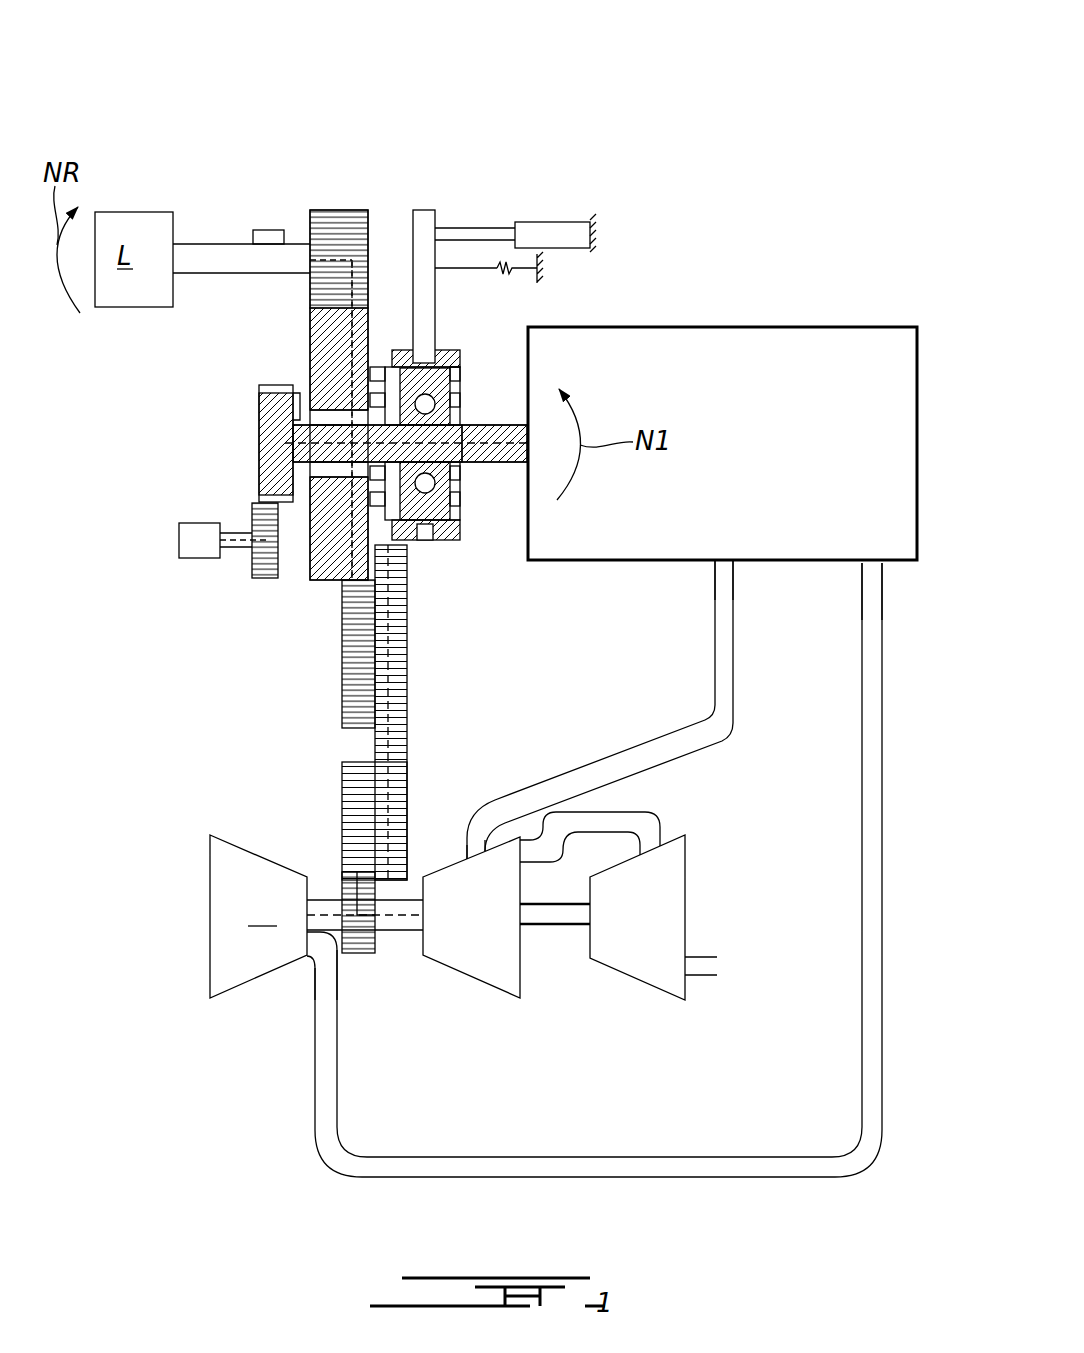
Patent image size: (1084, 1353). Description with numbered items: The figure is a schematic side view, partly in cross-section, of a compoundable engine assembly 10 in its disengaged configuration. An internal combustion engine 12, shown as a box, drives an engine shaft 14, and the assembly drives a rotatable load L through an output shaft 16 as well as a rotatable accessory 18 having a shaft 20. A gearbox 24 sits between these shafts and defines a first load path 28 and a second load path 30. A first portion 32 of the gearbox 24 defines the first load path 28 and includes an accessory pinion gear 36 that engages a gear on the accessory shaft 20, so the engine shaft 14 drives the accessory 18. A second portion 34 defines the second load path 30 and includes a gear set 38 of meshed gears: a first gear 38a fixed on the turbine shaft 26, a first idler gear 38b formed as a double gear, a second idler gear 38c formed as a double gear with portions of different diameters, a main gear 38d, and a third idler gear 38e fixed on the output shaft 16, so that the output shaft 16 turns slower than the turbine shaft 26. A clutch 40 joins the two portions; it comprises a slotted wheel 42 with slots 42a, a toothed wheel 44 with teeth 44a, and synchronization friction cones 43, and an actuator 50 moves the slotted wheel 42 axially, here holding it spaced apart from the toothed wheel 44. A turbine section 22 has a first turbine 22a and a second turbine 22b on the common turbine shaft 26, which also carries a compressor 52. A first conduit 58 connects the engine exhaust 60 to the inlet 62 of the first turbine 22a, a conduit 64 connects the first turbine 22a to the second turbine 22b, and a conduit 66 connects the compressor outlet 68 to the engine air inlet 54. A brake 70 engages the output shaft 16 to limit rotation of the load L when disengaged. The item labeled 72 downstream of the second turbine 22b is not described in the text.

The engine assembly 10 is at (782, 178).
The internal combustion engine 12 is at (848, 400).
The engine shaft 14 is at (500, 464).
The output shaft 16 is at (207, 244).
The rotatable accessory 18 is at (190, 558).
The shaft of the accessory 20 is at (236, 548).
The turbine section 22 is at (620, 964).
The first turbine 22a is at (473, 990).
The second turbine 22b is at (655, 985).
The gearbox 24 is at (338, 563).
The turbine shaft 26 is at (400, 932).
The first load path 28 is at (258, 448).
The second load path 30 is at (405, 740).
The first portion 32 is at (231, 434).
The second portion 34 is at (442, 712).
The accessory pinion gear 36 is at (256, 402).
The gear set 38 is at (355, 563).
The first gear 38a is at (356, 953).
The first idler gear 38b is at (408, 808).
The second idler gear 38c is at (342, 660).
The main gear 38d is at (310, 330).
The third idler gear 38e is at (350, 208).
The clutch 40 is at (511, 358).
The slotted wheel 42 is at (487, 373).
The slots 42a is at (372, 500).
The synchronization friction cones 43 is at (452, 378).
The toothed wheel 44 is at (487, 227).
The teeth 44a is at (424, 355).
The actuator 50 is at (553, 222).
The compressor 52 is at (258, 916).
The air inlet 54 is at (886, 566).
The first conduit 58 is at (736, 726).
The exhaust 60 is at (711, 564).
The inlet 62 is at (477, 864).
The conduit 64 is at (662, 812).
The conduit 66 is at (884, 980).
The outlet 68 is at (305, 960).
The brake 70 is at (268, 230).
The exhaust outlet 72 is at (729, 963).